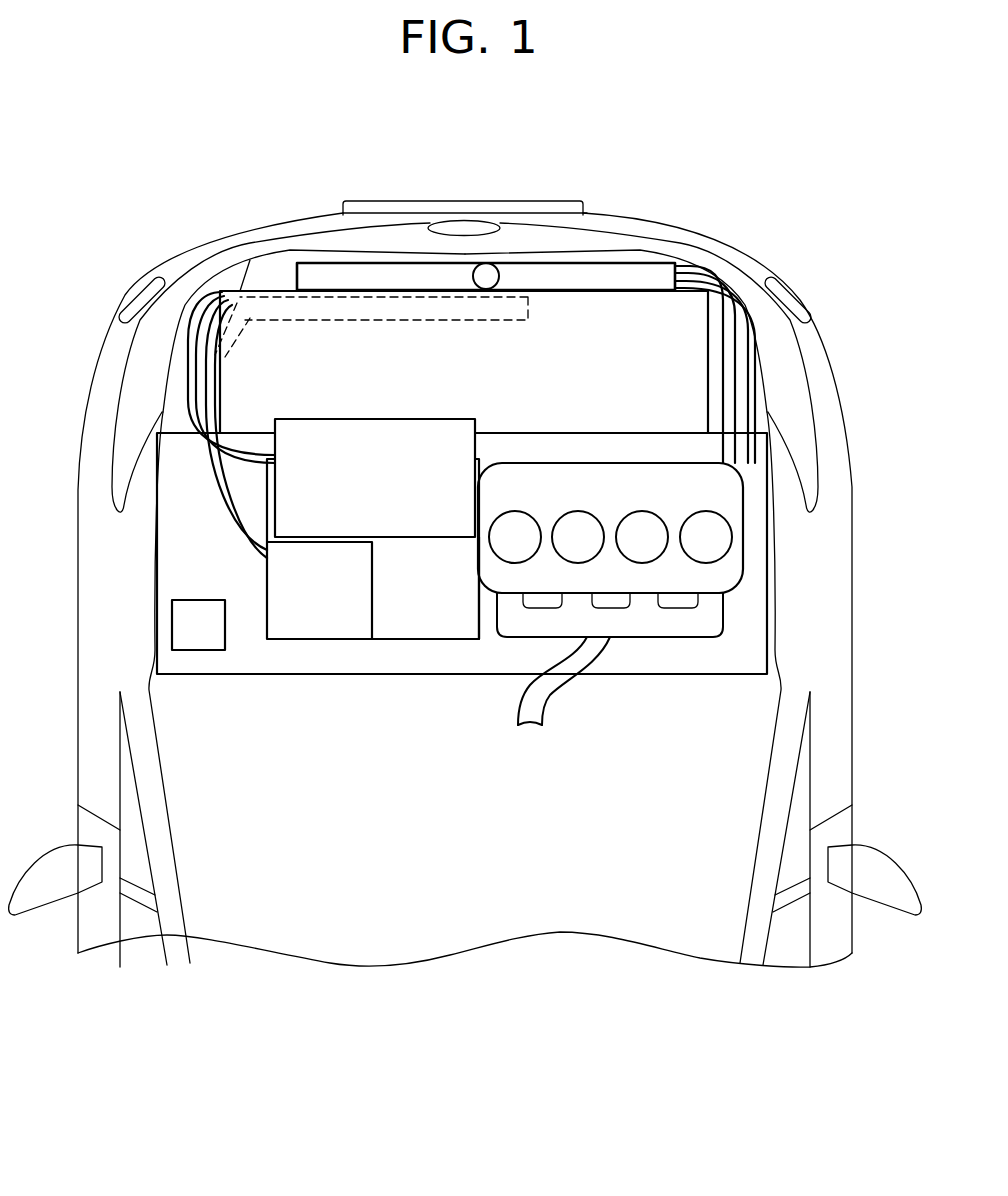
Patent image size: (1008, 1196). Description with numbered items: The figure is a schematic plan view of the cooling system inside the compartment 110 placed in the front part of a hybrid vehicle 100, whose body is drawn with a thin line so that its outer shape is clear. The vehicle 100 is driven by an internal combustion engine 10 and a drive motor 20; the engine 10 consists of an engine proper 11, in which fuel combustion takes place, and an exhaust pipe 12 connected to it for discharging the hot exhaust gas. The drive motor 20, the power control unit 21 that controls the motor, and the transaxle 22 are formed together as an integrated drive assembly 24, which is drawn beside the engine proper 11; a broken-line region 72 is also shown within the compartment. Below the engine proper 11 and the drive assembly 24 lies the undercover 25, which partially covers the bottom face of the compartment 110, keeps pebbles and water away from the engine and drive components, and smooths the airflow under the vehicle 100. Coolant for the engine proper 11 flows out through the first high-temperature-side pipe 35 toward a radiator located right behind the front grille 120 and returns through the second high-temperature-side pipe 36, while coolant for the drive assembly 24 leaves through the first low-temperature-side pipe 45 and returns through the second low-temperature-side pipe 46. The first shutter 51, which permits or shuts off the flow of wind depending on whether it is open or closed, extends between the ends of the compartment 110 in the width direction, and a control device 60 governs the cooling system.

The vehicle 100 is at (755, 202).
The compartment 110 is at (772, 542).
The front grille 120 is at (288, 262).
The first shutter 51 is at (680, 322).
The dashed component 72 is at (371, 327).
The second low-temperature-side pipe 46 is at (203, 383).
The first low-temperature-side pipe 45 is at (187, 395).
The second high-temperature-side pipe 36 is at (740, 288).
The first high-temperature-side pipe 35 is at (737, 363).
The undercover 25 is at (252, 652).
The drive assembly 24 is at (465, 656).
The power control unit 21 is at (400, 518).
The drive motor 20 is at (321, 622).
The transaxle 22 is at (437, 620).
The control device 60 is at (183, 617).
The internal combustion engine 10 is at (692, 612).
The engine proper 11 is at (730, 490).
The exhaust pipe 12 is at (642, 622).